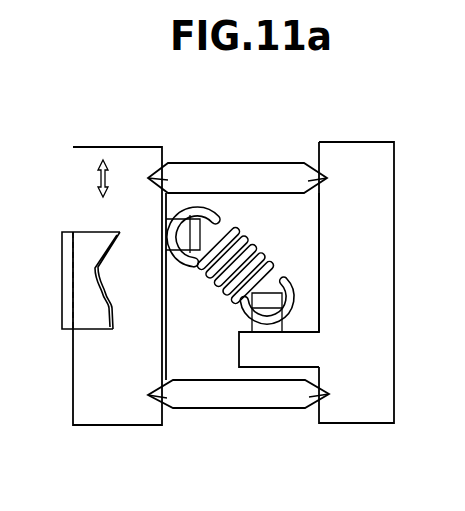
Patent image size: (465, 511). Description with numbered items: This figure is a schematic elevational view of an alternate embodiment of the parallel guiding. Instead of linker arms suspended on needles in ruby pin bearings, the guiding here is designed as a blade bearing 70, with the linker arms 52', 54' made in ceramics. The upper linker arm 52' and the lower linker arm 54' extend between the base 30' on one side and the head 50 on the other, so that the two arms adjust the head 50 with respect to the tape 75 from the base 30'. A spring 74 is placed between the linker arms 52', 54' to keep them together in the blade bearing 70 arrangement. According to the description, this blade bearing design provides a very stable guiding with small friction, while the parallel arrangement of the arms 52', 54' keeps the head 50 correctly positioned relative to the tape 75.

The base 30' is at (391, 277).
The head 50 is at (152, 146).
The linker arm 52' is at (237, 151).
The linker arm 54' is at (238, 366).
The blade bearing 70 is at (157, 173).
The spring 74 is at (245, 226).
The tape 75 is at (58, 272).